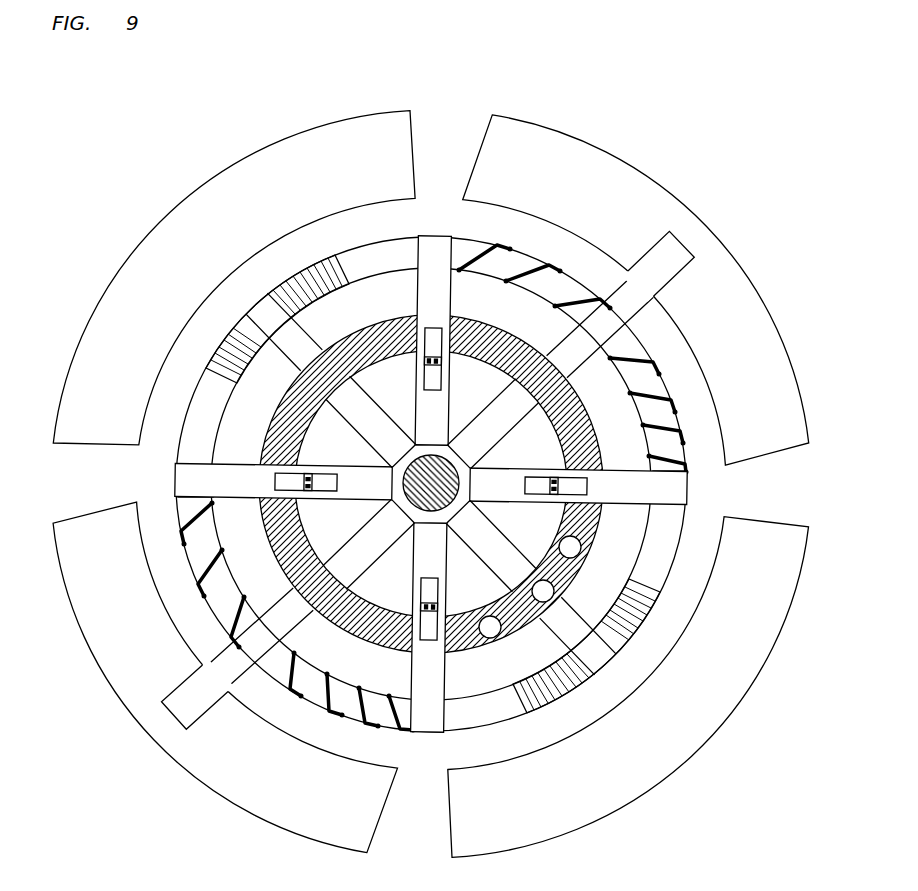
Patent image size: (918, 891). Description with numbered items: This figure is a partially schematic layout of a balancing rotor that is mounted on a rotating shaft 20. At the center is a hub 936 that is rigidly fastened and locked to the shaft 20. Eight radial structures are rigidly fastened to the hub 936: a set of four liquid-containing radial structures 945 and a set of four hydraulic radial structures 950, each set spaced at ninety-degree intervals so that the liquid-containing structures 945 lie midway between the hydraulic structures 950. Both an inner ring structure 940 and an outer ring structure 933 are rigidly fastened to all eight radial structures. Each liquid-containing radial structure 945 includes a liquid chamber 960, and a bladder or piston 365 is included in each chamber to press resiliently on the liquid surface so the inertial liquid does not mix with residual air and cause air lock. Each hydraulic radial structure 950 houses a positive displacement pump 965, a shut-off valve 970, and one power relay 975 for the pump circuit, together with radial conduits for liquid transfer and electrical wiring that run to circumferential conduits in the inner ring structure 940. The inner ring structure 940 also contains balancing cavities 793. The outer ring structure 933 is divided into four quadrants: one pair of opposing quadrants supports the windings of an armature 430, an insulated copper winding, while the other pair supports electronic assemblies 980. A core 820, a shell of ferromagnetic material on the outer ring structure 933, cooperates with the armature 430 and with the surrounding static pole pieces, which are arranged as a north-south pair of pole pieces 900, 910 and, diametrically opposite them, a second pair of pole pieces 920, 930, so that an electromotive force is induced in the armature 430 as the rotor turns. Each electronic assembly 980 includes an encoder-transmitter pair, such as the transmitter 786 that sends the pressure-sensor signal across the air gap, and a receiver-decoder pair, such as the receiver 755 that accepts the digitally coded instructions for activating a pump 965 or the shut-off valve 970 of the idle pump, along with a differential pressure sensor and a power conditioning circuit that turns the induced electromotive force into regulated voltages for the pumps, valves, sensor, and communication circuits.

The static pole piece 900 is at (573, 140).
The static pole piece 910 is at (796, 403).
The static pole piece 920 is at (85, 632).
The static pole piece 930 is at (252, 806).
The transmitter 786 is at (112, 284).
The receiver 755 is at (793, 583).
The outer ring structure 933 is at (657, 572).
The core 820 is at (658, 385).
The armature 430 is at (685, 435).
The liquid-containing radial structure 945 is at (440, 249).
The inner ring structure 940 is at (465, 655).
The liquid chamber 960 is at (440, 327).
The bladder or piston 365 is at (418, 363).
The hydraulic radial structure 950 is at (312, 338).
The positive displacement pump 965 is at (662, 295).
The shut-off valve 970 is at (285, 325).
The electronic assembly 980 is at (280, 283).
The power relay 975 is at (431, 484).
The hub 936 is at (465, 478).
The shaft 20 is at (403, 477).
The balancing cavity 793 is at (600, 545).